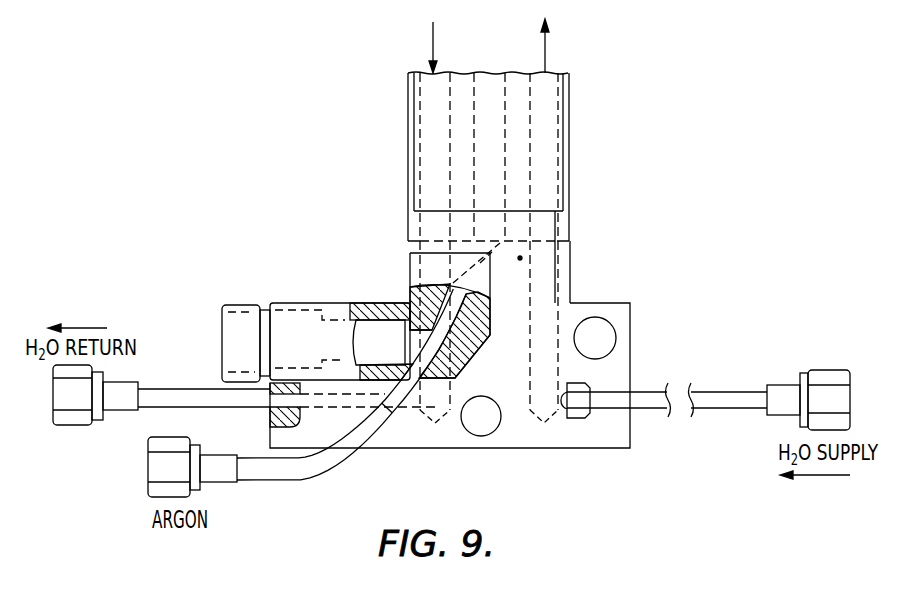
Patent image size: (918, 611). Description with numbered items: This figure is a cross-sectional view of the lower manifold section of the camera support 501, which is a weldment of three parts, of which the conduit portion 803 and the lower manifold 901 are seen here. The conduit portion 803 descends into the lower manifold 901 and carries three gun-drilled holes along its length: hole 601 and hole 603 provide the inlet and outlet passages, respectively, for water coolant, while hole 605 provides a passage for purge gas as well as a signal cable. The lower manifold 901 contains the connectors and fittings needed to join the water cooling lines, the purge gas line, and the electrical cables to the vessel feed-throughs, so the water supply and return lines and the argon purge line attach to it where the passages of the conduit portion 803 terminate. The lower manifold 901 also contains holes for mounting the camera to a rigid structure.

The camera support 501 is at (572, 153).
The hole 601 is at (437, 75).
The hole 605 is at (492, 72).
The hole 603 is at (552, 73).
The conduit portion 803 is at (385, 170).
The lower manifold 901 is at (663, 334).